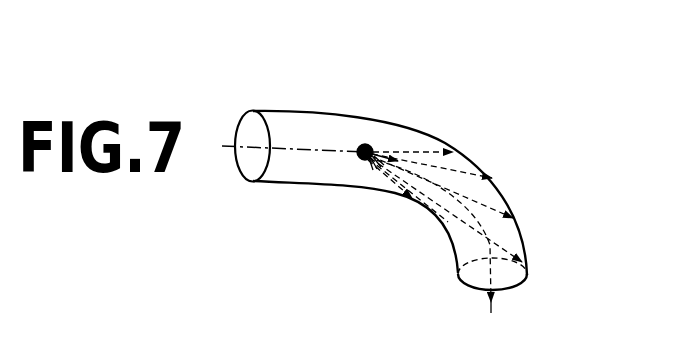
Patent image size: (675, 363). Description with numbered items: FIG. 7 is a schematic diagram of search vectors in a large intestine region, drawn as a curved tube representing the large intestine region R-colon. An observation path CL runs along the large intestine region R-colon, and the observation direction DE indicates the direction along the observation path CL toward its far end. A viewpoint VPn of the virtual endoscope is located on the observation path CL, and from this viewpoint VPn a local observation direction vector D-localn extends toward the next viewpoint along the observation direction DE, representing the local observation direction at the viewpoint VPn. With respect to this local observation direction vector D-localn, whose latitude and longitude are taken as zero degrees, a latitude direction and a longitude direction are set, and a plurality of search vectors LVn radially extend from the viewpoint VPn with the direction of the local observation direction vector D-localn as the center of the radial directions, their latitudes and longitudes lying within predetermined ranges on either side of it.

The large intestine region information R-colon is at (272, 117).
The observation path information CL is at (293, 143).
The viewpoint information VPn is at (367, 144).
The search vector LVn is at (465, 168).
The local observation direction vector D-localn is at (382, 168).
The observation direction information DE is at (497, 310).